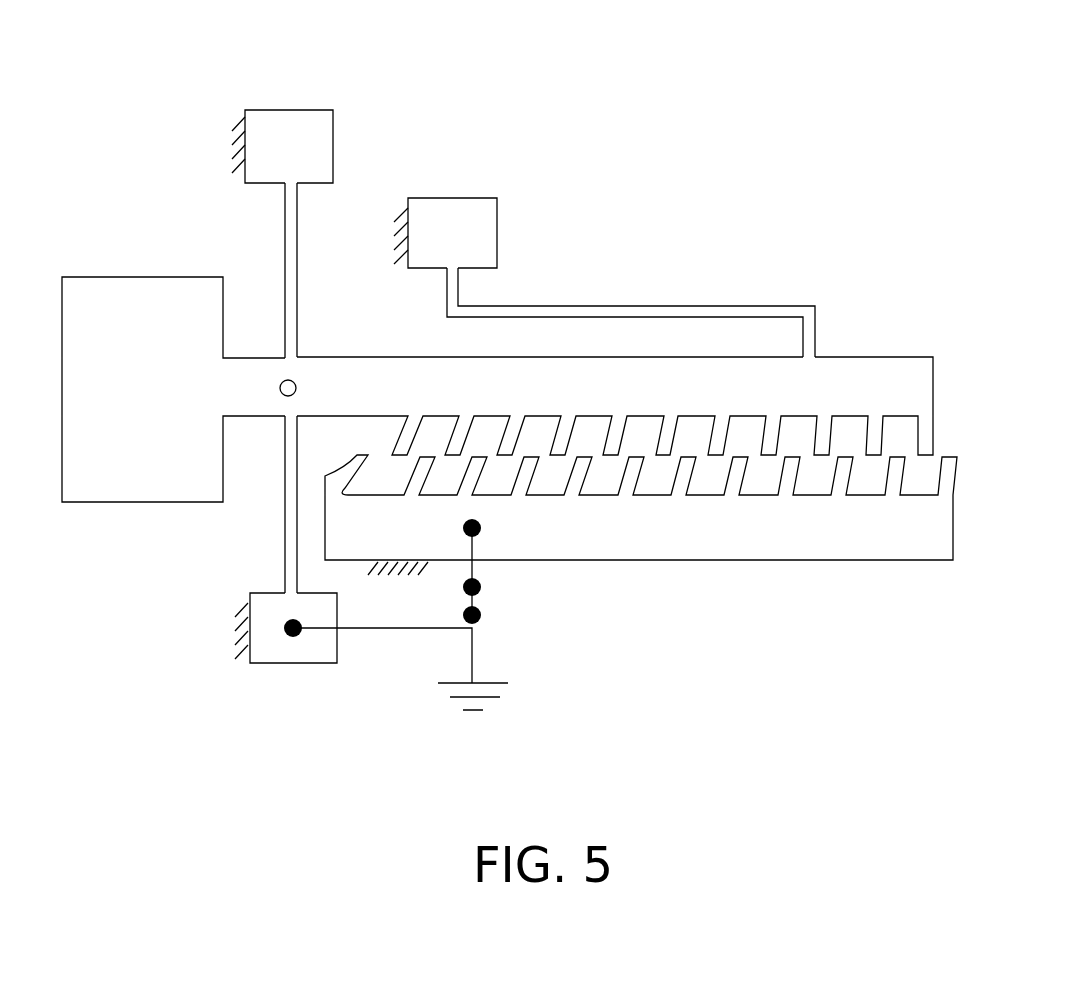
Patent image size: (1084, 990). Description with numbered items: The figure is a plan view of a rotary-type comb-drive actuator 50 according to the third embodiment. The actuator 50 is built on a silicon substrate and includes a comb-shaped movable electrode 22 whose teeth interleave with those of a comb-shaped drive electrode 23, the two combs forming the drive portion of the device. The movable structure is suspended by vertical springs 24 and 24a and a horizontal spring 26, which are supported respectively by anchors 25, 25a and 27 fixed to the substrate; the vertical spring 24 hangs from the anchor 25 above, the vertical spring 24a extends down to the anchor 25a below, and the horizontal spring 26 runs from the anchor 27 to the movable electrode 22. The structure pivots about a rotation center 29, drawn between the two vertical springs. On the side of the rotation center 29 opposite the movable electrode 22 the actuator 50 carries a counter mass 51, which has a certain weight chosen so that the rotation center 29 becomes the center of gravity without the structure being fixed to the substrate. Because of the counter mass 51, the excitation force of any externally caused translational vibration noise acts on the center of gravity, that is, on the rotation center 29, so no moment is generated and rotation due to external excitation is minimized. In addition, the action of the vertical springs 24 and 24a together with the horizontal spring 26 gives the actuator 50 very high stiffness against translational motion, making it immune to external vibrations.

The rotary-type comb-drive actuator 50 is at (667, 212).
The counter mass 51 is at (122, 282).
The anchor 25 is at (287, 110).
The vertical spring 24 is at (297, 263).
The anchor 27 is at (467, 198).
The horizontal spring 26 is at (710, 311).
The comb-shaped movable electrode 22 is at (875, 363).
The rotation center 29 is at (284, 397).
The vertical spring 24a is at (288, 560).
The anchor 25a is at (286, 665).
The comb-shaped drive electrode 23 is at (773, 562).